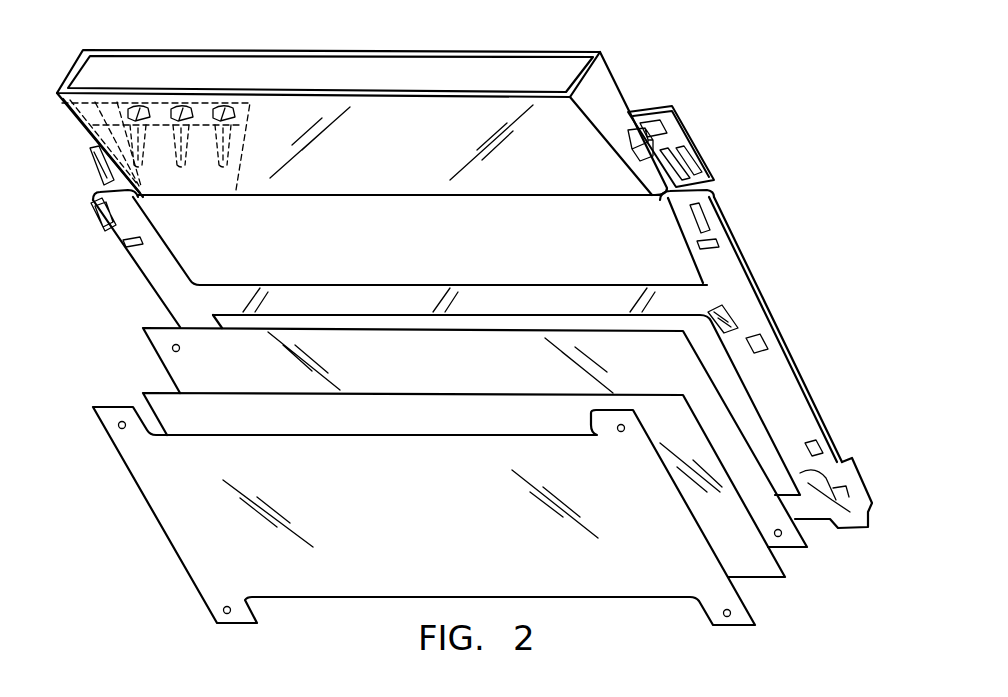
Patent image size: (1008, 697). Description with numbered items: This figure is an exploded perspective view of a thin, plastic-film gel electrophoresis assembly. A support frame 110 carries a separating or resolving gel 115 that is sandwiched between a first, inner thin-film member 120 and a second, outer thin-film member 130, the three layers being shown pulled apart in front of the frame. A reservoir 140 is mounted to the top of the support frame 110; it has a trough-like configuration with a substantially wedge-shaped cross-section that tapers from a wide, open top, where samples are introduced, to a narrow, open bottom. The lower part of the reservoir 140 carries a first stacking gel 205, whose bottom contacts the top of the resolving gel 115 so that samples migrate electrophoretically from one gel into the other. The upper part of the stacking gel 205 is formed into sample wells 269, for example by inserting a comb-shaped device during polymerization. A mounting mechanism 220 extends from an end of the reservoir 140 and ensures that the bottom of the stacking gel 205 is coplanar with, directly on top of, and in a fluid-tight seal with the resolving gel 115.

The support frame 110 is at (748, 276).
The resolving gel 115 is at (408, 422).
The first, inner thin-film member 120 is at (434, 372).
The second, outer thin-film member 130 is at (428, 524).
The reservoir 140 is at (607, 66).
The stacking gel 205 is at (217, 97).
The mounting mechanism 220 is at (688, 96).
The sample wells 269 is at (150, 100).